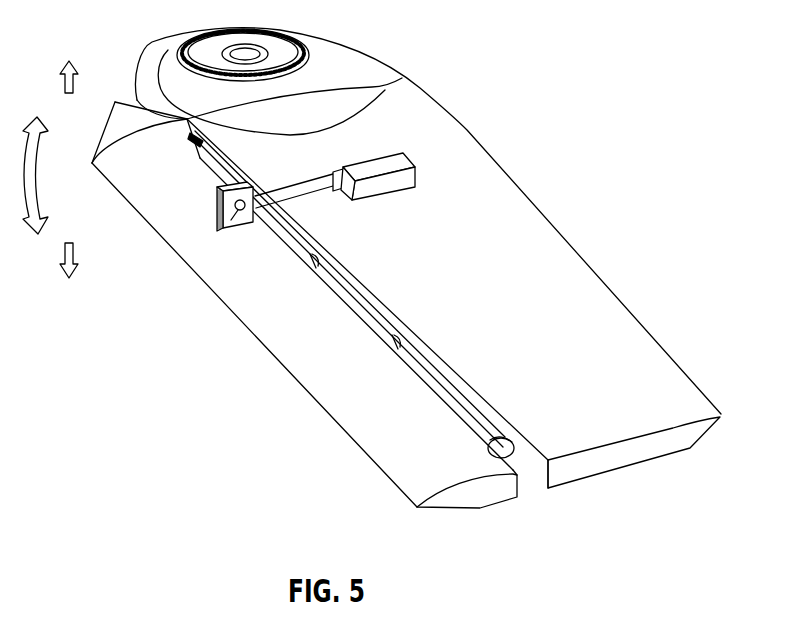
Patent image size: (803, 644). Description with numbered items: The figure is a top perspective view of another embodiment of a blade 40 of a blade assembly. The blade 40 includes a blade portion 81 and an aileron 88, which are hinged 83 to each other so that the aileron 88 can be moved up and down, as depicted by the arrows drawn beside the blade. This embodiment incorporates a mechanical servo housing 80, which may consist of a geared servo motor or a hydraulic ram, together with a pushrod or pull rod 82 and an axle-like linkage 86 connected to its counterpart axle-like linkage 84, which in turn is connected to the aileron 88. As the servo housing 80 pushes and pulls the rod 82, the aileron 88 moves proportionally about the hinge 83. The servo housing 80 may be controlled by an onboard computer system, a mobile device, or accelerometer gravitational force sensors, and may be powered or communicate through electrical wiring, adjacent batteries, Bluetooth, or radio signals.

The blade 40 is at (537, 518).
The mechanical servo housing 80 is at (417, 183).
The blade portion 81 is at (613, 363).
The pushrod or pull rod 82 is at (323, 178).
The hinge 83 is at (450, 393).
The counterpart axle-like linkage 84 is at (243, 221).
The axle-like linkage 86 is at (238, 210).
The aileron 88 is at (403, 472).